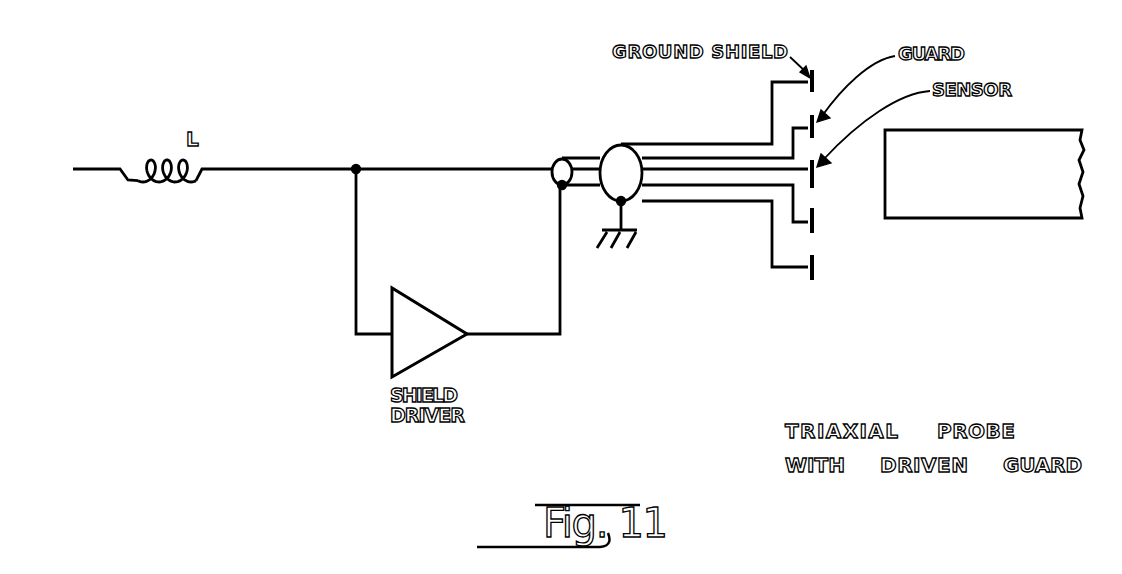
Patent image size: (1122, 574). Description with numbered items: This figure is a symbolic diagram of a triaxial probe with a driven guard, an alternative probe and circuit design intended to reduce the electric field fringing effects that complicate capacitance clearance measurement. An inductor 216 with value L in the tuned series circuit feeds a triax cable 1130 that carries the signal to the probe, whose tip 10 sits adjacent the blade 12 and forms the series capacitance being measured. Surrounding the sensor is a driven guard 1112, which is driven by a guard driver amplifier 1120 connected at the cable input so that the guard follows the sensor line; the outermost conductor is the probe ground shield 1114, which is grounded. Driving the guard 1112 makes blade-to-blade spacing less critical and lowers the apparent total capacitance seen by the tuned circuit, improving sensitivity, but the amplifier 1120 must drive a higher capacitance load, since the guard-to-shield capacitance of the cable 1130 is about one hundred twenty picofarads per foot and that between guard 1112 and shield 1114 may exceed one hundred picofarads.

The inductor 216 is at (156, 163).
The triax cable 1130 is at (696, 143).
The probe tip 10 is at (815, 180).
The driven guard 1112 is at (815, 225).
The probe ground shield 1114 is at (815, 268).
The guard driver amplifier 1120 is at (438, 310).
The blade 12 is at (1046, 130).